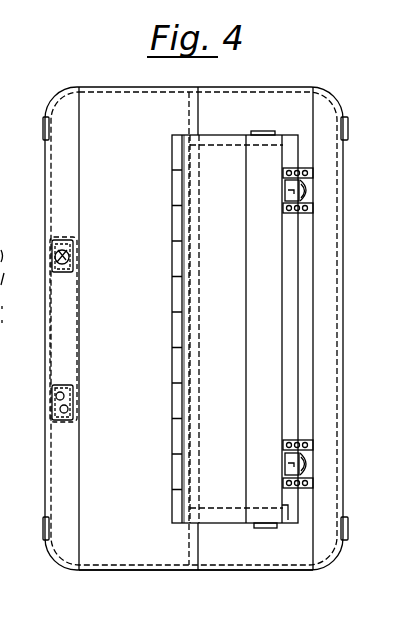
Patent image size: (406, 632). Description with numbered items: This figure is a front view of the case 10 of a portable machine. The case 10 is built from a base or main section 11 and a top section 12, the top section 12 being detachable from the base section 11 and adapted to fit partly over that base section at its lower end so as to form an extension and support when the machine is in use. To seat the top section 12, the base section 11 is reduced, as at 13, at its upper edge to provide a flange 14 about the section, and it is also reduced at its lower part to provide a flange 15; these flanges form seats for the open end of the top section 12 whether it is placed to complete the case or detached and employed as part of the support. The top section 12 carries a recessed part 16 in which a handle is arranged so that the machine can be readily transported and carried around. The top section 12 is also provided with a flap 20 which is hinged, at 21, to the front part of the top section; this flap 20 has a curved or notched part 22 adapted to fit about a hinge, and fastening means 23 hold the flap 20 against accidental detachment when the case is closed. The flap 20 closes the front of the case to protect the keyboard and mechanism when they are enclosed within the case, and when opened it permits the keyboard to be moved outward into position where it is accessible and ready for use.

The case 10 is at (114, 97).
The base or main section 11 is at (260, 560).
The top section 12 is at (133, 557).
The reduced part 13 is at (190, 573).
The flange 14 is at (197, 573).
The flange 15 is at (327, 340).
The recessed part 16 is at (75, 343).
The flap 20 is at (200, 398).
The hinge 21 is at (180, 322).
The curved or notched part 22 is at (262, 425).
The fastening means 23 is at (313, 195).